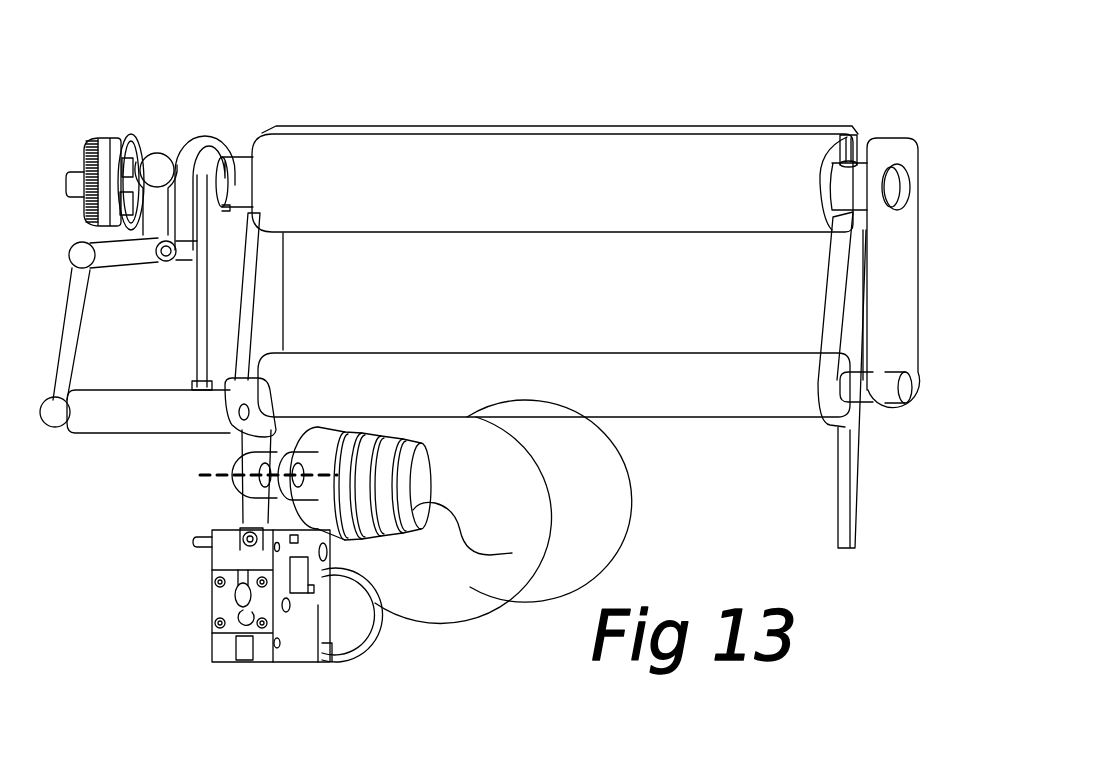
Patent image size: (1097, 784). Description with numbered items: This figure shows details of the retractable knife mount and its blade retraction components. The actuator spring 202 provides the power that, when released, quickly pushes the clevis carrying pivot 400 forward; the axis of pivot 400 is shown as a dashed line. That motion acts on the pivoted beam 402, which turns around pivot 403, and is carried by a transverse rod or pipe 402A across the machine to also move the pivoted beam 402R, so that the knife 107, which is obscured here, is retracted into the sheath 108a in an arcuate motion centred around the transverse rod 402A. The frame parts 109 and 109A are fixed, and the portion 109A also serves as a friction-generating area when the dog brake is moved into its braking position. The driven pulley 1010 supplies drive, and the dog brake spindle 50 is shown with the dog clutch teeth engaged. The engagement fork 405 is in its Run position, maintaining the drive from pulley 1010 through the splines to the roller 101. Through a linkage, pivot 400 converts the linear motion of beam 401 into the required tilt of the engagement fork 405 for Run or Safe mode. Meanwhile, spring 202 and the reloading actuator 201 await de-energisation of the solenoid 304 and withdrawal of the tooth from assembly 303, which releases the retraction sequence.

The dog brake spindle 50 is at (150, 133).
The driven pulley 1010 is at (112, 133).
The engagement fork 405 is at (170, 135).
The portion of the frame 109A is at (220, 133).
The knife 107 is at (560, 96).
The roller 101 is at (618, 207).
The sheath 108a is at (843, 125).
The pivoted beam 402 is at (268, 246).
The pivoted beam 402R is at (835, 297).
The pivot 403 is at (168, 262).
The fixed frame 109 is at (197, 325).
The transverse rod 402A is at (720, 400).
The beam 401 is at (152, 430).
The pivot 400 is at (217, 477).
The reloading actuator 201 is at (523, 495).
The actuator spring 202 is at (503, 553).
The assembly 303 is at (380, 623).
The solenoid 304 is at (240, 657).